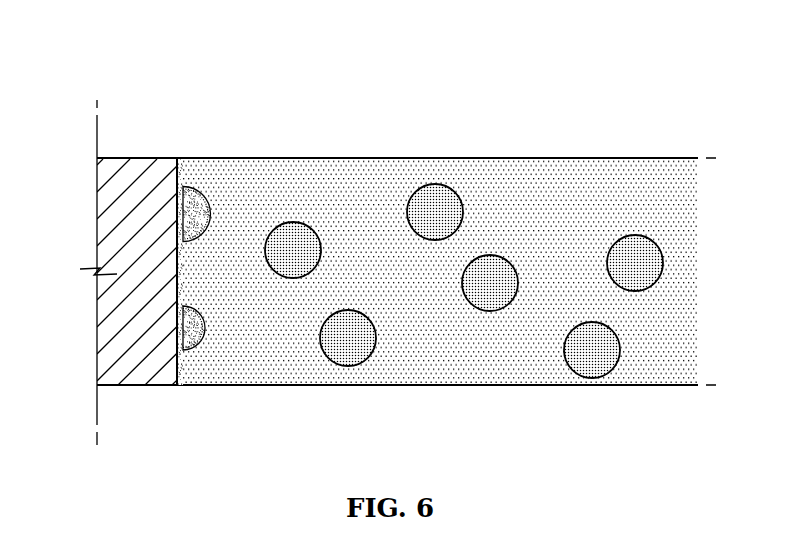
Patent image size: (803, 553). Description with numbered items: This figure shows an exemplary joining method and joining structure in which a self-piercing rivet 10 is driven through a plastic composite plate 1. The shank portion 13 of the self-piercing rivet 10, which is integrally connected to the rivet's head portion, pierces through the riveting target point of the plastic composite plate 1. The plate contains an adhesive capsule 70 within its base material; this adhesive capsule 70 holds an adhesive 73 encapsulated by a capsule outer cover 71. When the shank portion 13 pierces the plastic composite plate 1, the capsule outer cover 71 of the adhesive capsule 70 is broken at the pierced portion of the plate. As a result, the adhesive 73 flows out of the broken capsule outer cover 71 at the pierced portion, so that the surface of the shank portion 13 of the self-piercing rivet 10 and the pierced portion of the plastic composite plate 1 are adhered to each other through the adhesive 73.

The plastic composite plate 1 is at (398, 38).
The self-piercing rivet 10 is at (143, 138).
The shank portion 13 is at (135, 305).
The adhesive capsule 70 is at (223, 200).
The capsule outer cover 71 is at (198, 185).
The adhesive 73 is at (180, 220).